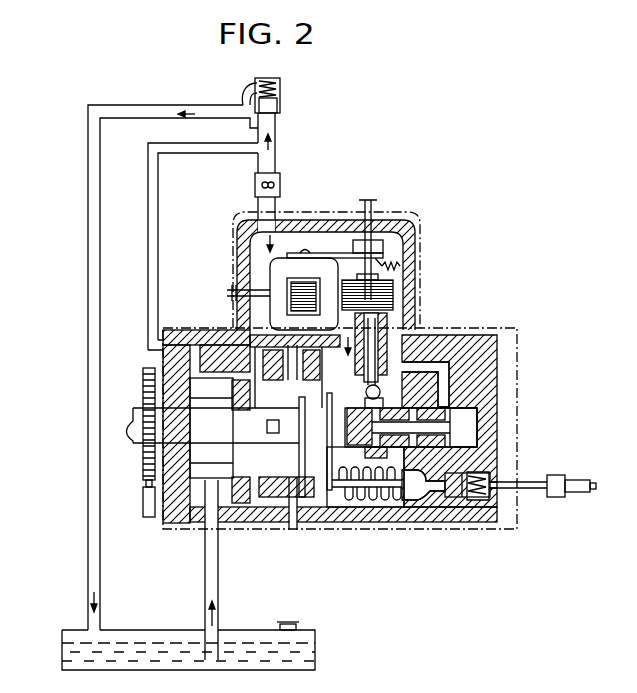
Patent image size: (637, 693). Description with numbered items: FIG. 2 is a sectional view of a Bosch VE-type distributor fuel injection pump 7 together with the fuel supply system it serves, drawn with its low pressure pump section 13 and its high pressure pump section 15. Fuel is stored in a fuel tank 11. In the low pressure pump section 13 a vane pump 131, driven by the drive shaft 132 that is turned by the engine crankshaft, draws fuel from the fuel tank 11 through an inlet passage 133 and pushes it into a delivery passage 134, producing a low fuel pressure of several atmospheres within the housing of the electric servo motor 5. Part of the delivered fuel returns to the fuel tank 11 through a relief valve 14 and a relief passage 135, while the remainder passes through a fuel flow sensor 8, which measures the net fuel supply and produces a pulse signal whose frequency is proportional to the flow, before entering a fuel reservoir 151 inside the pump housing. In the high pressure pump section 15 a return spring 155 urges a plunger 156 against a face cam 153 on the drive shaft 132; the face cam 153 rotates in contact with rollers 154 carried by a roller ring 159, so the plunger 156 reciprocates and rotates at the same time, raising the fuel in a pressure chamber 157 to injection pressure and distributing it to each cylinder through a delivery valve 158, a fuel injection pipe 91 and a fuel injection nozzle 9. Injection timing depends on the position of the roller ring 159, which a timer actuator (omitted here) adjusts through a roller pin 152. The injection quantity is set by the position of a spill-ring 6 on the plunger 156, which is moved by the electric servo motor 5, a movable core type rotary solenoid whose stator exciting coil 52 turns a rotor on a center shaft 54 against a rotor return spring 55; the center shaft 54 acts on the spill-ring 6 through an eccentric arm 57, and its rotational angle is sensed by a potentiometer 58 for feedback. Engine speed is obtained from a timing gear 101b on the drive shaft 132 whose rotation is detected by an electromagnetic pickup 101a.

The electric servo motor 5 is at (400, 290).
The spill-ring 6 is at (392, 506).
The fuel injection pump 7 is at (480, 319).
The fuel flow sensor 8 is at (255, 186).
The fuel injection nozzle 9 is at (556, 498).
The fuel tank 11 is at (315, 650).
The low pressure pump section 13 is at (188, 330).
The relief valve 14 is at (289, 98).
The high pressure pump section 15 is at (517, 362).
The stator exciting coil 52 is at (317, 262).
The center shaft 54 is at (372, 318).
The rotor return spring 55 is at (398, 264).
The eccentric arm 57 is at (380, 392).
The potentiometer 58 is at (371, 240).
The fuel injection pipe 91 is at (528, 489).
The electromagnetic pickup 101a is at (143, 510).
The timing gear 101b is at (143, 378).
The vane pump 131 is at (186, 505).
The drive shaft 132 is at (143, 441).
The inlet passage 133 is at (205, 600).
The delivery passage 134 is at (168, 220).
The relief passage 135 is at (88, 224).
The fuel reservoir 151 is at (244, 503).
The roller pin 152 is at (293, 520).
The face cam 153 is at (316, 518).
The rollers 154 is at (300, 520).
The return spring 155 is at (378, 512).
The plunger 156 is at (336, 498).
The pressure chamber 157 is at (468, 427).
The delivery valve 158 is at (462, 500).
The roller ring 159 is at (266, 512).